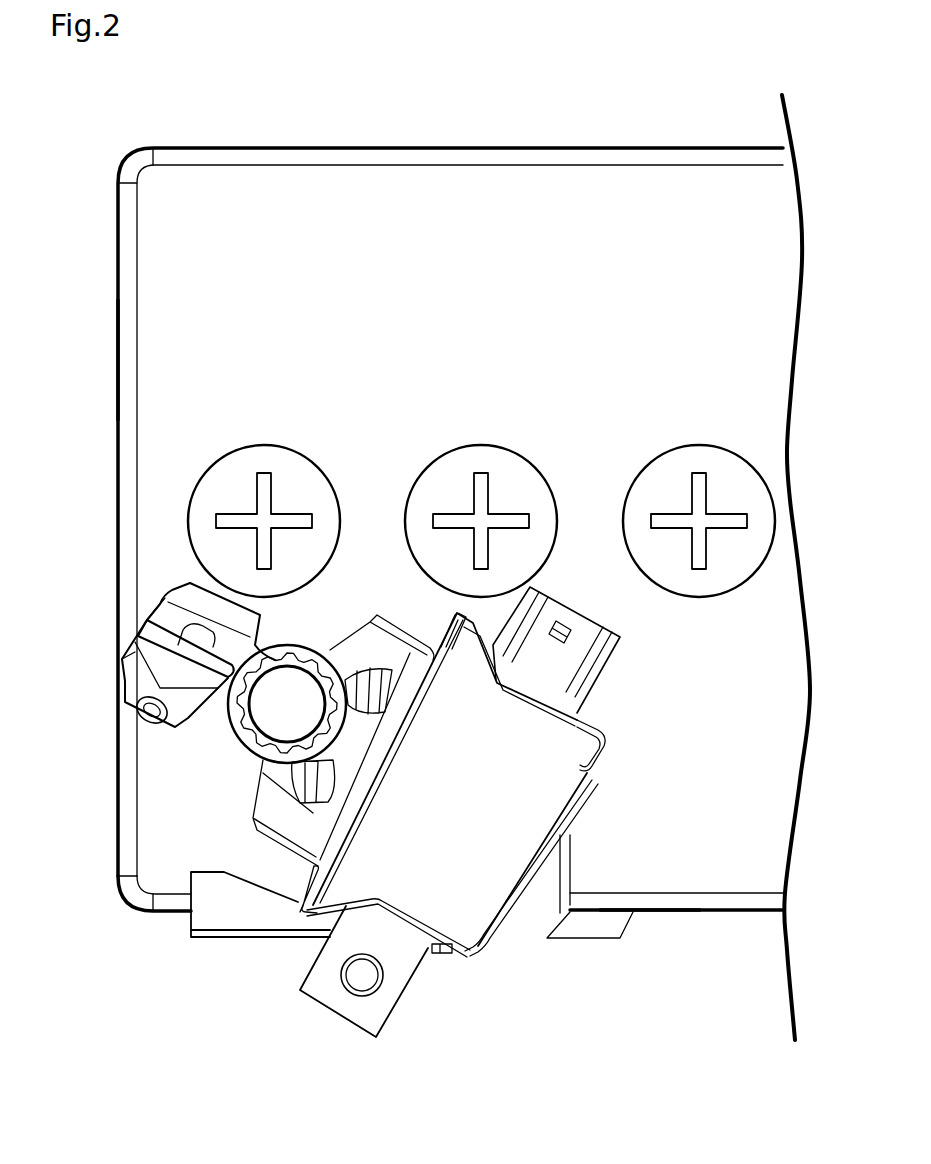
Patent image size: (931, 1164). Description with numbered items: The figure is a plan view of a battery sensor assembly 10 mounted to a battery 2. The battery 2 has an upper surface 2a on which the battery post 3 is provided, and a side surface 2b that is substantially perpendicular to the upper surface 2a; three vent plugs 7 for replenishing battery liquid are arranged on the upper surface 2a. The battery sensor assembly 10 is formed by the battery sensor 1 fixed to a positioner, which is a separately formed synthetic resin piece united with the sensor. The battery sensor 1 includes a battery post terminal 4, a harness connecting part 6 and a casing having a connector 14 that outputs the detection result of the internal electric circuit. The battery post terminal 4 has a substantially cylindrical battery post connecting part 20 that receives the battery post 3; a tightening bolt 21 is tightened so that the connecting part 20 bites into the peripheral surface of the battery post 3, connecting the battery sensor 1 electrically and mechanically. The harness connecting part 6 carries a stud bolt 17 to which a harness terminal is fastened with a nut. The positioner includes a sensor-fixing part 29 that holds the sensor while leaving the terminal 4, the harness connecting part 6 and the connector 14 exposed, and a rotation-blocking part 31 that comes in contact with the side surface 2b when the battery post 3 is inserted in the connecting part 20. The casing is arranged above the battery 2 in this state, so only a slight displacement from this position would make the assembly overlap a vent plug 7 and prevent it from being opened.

The battery sensor 1 is at (371, 592).
The battery 2 is at (571, 228).
The upper surface 2a is at (187, 358).
The side surface 2b is at (713, 912).
The battery post 3 is at (289, 686).
The battery post terminal 4 is at (237, 822).
The harness connecting part 6 is at (380, 1022).
The vent plug 7 is at (284, 468).
The battery sensor assembly 10 is at (690, 755).
The connector 14 is at (566, 607).
The bolt 17 is at (360, 985).
The battery post connecting part 20 is at (246, 750).
The tightening bolt 21 is at (173, 732).
The sensor-fixing part 29 is at (504, 948).
The rotation-blocking part 31 is at (232, 935).